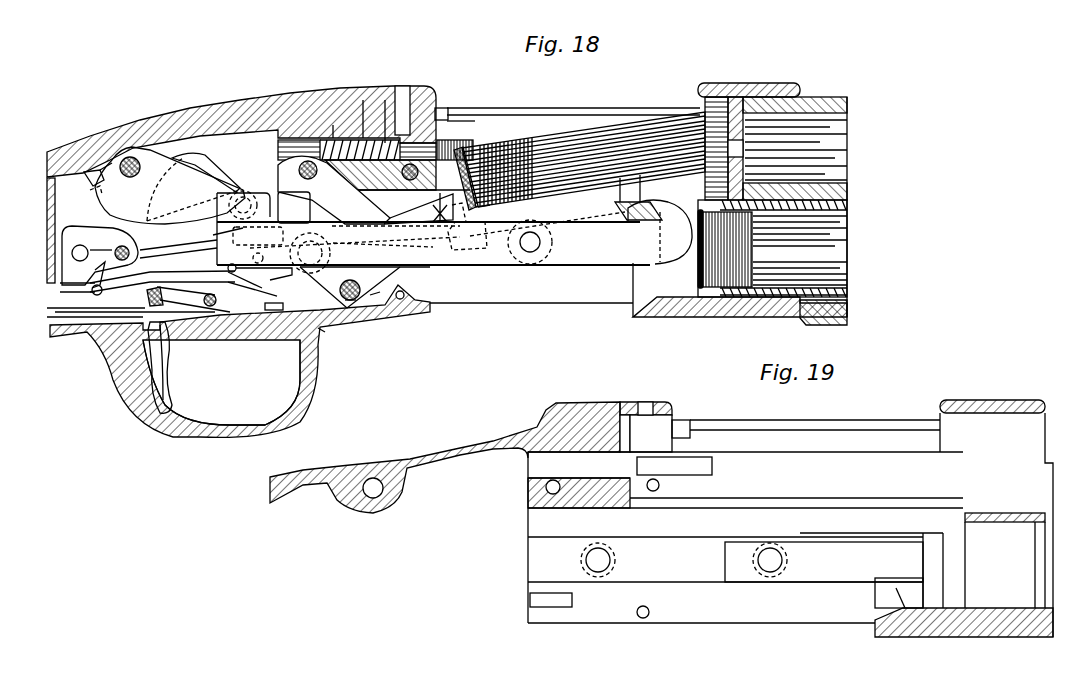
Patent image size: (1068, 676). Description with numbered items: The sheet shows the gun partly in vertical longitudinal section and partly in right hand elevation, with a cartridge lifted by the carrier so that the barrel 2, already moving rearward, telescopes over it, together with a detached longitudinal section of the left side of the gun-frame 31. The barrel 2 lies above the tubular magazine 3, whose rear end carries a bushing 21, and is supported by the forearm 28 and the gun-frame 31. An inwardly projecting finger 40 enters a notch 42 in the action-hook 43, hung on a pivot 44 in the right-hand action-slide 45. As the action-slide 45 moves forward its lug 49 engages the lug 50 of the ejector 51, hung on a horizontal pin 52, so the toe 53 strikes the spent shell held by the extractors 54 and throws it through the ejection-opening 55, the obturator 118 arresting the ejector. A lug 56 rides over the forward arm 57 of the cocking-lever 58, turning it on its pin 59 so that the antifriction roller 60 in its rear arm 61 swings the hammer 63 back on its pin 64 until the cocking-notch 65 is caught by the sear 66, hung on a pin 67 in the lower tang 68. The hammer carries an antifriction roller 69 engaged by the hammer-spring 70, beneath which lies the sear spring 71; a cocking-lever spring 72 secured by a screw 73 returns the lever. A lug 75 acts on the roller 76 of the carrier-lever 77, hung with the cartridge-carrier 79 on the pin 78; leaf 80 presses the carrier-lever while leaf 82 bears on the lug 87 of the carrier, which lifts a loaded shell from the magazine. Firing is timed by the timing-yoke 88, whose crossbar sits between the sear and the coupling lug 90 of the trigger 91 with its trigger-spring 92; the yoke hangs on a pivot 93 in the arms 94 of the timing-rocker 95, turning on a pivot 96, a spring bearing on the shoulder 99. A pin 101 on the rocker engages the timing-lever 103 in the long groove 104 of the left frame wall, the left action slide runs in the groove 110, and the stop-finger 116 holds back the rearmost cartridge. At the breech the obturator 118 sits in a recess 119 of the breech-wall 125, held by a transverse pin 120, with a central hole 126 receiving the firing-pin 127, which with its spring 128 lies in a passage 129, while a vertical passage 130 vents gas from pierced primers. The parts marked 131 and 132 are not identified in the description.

In FIG. 18, the barrel 2 is at (816, 100).
In FIG. 18, the magazine 3 is at (823, 297).
In FIG. 18, the bushing 21 is at (770, 292).
In FIG. 18, the forearm 28 is at (827, 323).
In FIG. 18, the gun-frame 31 is at (682, 318).
In FIG. 19, the gun-frame 31 is at (964, 508).
In FIG. 18, the finger 40 is at (643, 218).
In FIG. 18, the notch 42 is at (650, 213).
In FIG. 18, the action-hook 43 is at (471, 232).
In FIG. 18, the pivot 44 is at (530, 253).
In FIG. 18, the right-hand action-slide 45 is at (478, 212).
In FIG. 18, the lug 49 is at (262, 195).
In FIG. 18, the lug 50 is at (294, 207).
In FIG. 18, the ejector 51 is at (365, 190).
In FIG. 18, the pin 52 is at (307, 163).
In FIG. 18, the toe 53 is at (438, 212).
In FIG. 18, the extractors 54 is at (480, 148).
In FIG. 18, the ejection-opening 55 is at (573, 105).
In FIG. 18, the lug 56 is at (357, 223).
In FIG. 18, the forward arm 57 is at (393, 272).
In FIG. 18, the cocking-lever 58 is at (377, 295).
In FIG. 18, the pin 59 is at (352, 300).
In FIG. 18, the antifriction roller 60 is at (349, 287).
In FIG. 18, the rear arm 61 is at (342, 284).
In FIG. 18, the hammer 63 is at (178, 242).
In FIG. 18, the pin 64 is at (260, 252).
In FIG. 18, the cocking-notch 65 is at (268, 286).
In FIG. 18, the sear 66 is at (187, 297).
In FIG. 18, the pin 67 is at (212, 307).
In FIG. 18, the lower tang 68 is at (221, 382).
In FIG. 18, the antifriction roller 69 is at (240, 282).
In FIG. 18, the hammer-spring 70 is at (162, 277).
In FIG. 18, the sear spring 71 is at (47, 312).
In FIG. 18, the cocking-lever spring 72 is at (322, 330).
In FIG. 18, the screw 73 is at (277, 305).
In FIG. 18, the lug 75 is at (219, 236).
In FIG. 18, the antifriction roller 76 is at (240, 190).
In FIG. 18, the carrier-lever 77 is at (170, 185).
In FIG. 18, the pin 78 is at (130, 157).
In FIG. 18, the cartridge-carrier 79 is at (173, 158).
In FIG. 18, the leaf 80 is at (92, 185).
In FIG. 18, the leaf 82 is at (100, 193).
In FIG. 18, the lug 87 is at (101, 168).
In FIG. 18, the timing-yoke 88 is at (147, 295).
In FIG. 18, the coupling lug 90 is at (163, 340).
In FIG. 18, the trigger 91 is at (170, 392).
In FIG. 18, the trigger-spring 92 is at (103, 337).
In FIG. 18, the pivot 93 is at (60, 293).
In FIG. 18, the arm 94 is at (92, 278).
In FIG. 18, the timing-rocker 95 is at (101, 250).
In FIG. 18, the pivot 96 is at (123, 246).
In FIG. 18, the shoulder 99 is at (60, 283).
In FIG. 18, the pin 101 is at (72, 255).
In FIG. 18, the timing-lever 103 is at (110, 240).
In FIG. 19, the groove 104 is at (684, 560).
In FIG. 19, the groove 110 is at (746, 521).
In FIG. 18, the stop-finger 116 is at (688, 258).
In FIG. 18, the obturator 118 is at (437, 107).
In FIG. 19, the recess 119 is at (627, 408).
In FIG. 18, the transverse pin 120 is at (409, 178).
In FIG. 18, the breech-wall 125 is at (333, 132).
In FIG. 19, the breech-wall 125 is at (622, 413).
In FIG. 18, the central hole 126 is at (447, 137).
In FIG. 18, the firing-pin 127 is at (290, 151).
In FIG. 18, the spring 128 is at (327, 150).
In FIG. 18, the passage 129 is at (363, 107).
In FIG. 18, the vertical passage 130 is at (403, 103).
In FIG. 19, the vertical passage 130 is at (649, 402).
In FIG. 18, the receiver bar 131 is at (433, 260).
In FIG. 18, the bolt face 132 is at (487, 203).